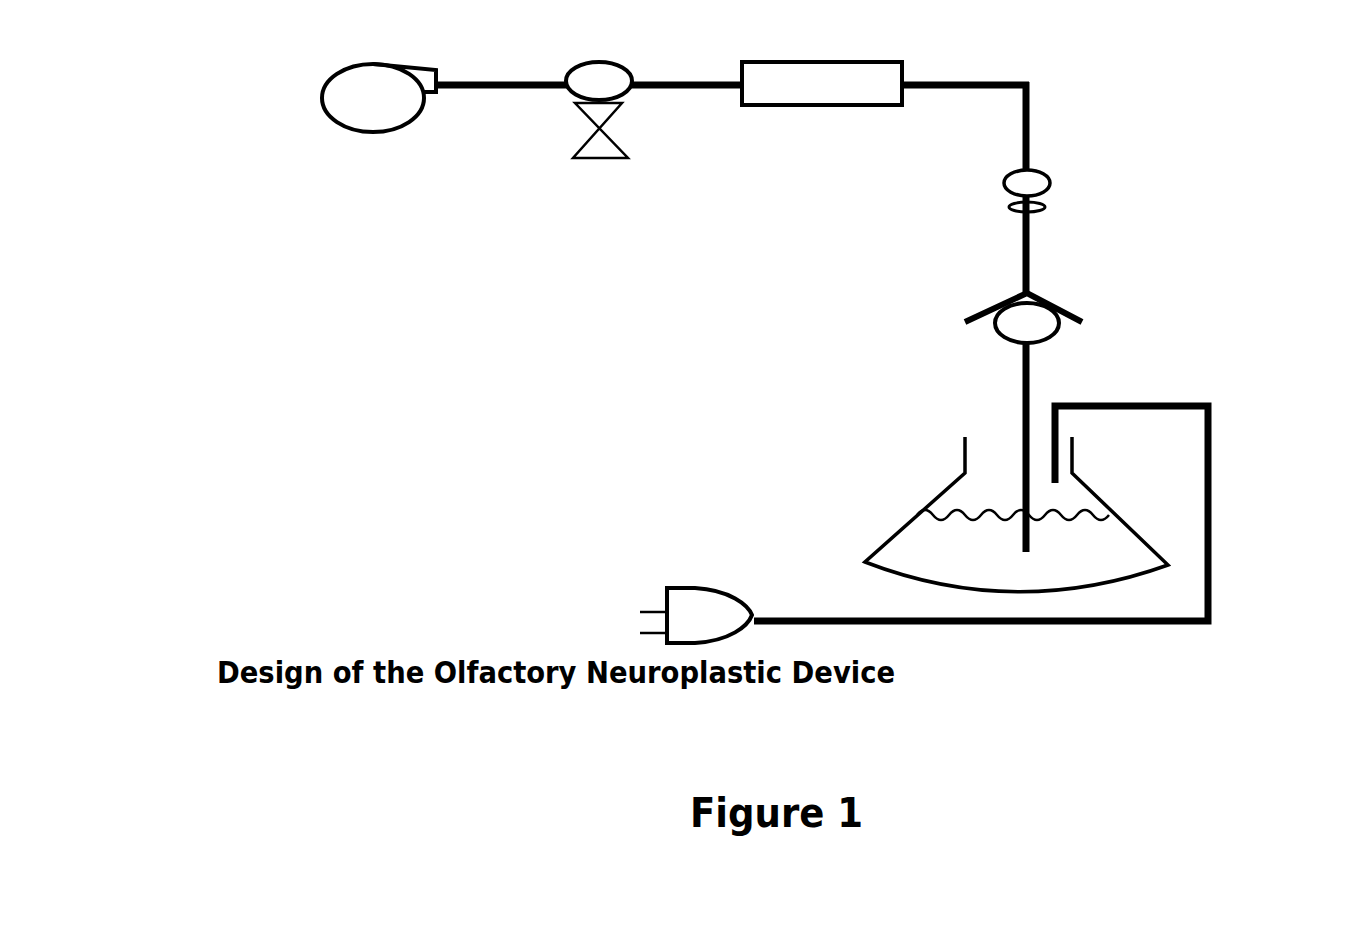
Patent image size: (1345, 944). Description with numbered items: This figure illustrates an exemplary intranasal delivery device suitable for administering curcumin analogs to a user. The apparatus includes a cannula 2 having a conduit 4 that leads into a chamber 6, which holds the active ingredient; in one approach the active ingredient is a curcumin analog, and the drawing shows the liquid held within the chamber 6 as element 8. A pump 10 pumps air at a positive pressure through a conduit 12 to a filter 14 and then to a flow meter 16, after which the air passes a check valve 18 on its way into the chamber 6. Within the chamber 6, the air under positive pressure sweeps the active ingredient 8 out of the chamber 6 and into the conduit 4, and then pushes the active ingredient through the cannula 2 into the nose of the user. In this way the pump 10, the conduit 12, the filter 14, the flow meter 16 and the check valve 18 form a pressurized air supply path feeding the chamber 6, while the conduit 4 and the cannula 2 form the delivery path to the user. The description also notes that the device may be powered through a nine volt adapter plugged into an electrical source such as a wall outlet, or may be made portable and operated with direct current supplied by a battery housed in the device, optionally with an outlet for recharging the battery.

The cannula 2 is at (758, 597).
The conduit 4 is at (940, 632).
The chamber 6 is at (1088, 477).
The odorant liquid 8 is at (1078, 540).
The pump 10 is at (396, 157).
The conduit 12 is at (524, 88).
The filter 14 is at (900, 110).
The flow meter 16 is at (1048, 165).
The check valve 18 is at (1047, 285).